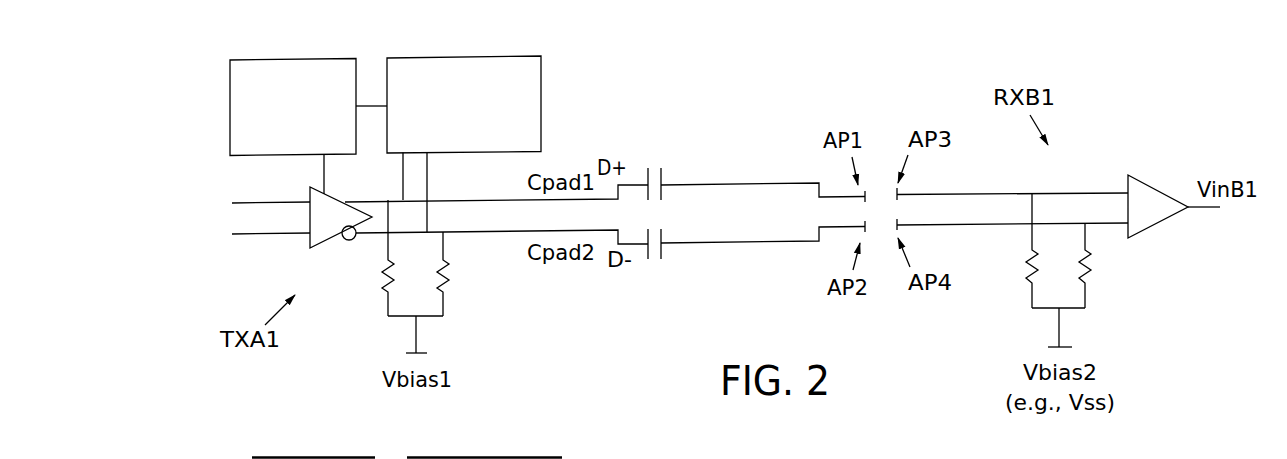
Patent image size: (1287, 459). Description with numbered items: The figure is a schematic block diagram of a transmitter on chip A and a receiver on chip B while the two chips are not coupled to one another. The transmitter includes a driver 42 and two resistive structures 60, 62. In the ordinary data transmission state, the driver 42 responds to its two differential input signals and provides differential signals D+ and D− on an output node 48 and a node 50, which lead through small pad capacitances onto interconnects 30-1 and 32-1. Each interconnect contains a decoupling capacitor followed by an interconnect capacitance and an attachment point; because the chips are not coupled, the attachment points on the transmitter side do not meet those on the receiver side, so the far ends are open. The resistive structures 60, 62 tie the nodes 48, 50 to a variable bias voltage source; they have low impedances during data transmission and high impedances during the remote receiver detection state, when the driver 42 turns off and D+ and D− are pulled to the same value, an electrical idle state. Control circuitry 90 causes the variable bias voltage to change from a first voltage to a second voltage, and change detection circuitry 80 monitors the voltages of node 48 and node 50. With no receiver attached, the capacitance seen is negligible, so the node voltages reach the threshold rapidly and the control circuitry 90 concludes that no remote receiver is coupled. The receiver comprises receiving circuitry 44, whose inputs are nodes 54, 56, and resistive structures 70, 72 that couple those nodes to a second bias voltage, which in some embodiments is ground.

The control circuitry 90 is at (332, 138).
The change detection circuitry 80 is at (541, 103).
The driver 42 is at (327, 240).
The output node 48 is at (460, 191).
The node 50 is at (458, 237).
The resistive structure 60 is at (387, 288).
The resistive structure 62 is at (447, 288).
The interconnect 30-1 is at (723, 132).
The interconnect 32-1 is at (727, 282).
The node 54 is at (957, 190).
The node 56 is at (957, 228).
The receiving circuitry 44 is at (1150, 187).
The resistive structure 70 is at (1022, 281).
The resistive structure 72 is at (1088, 280).